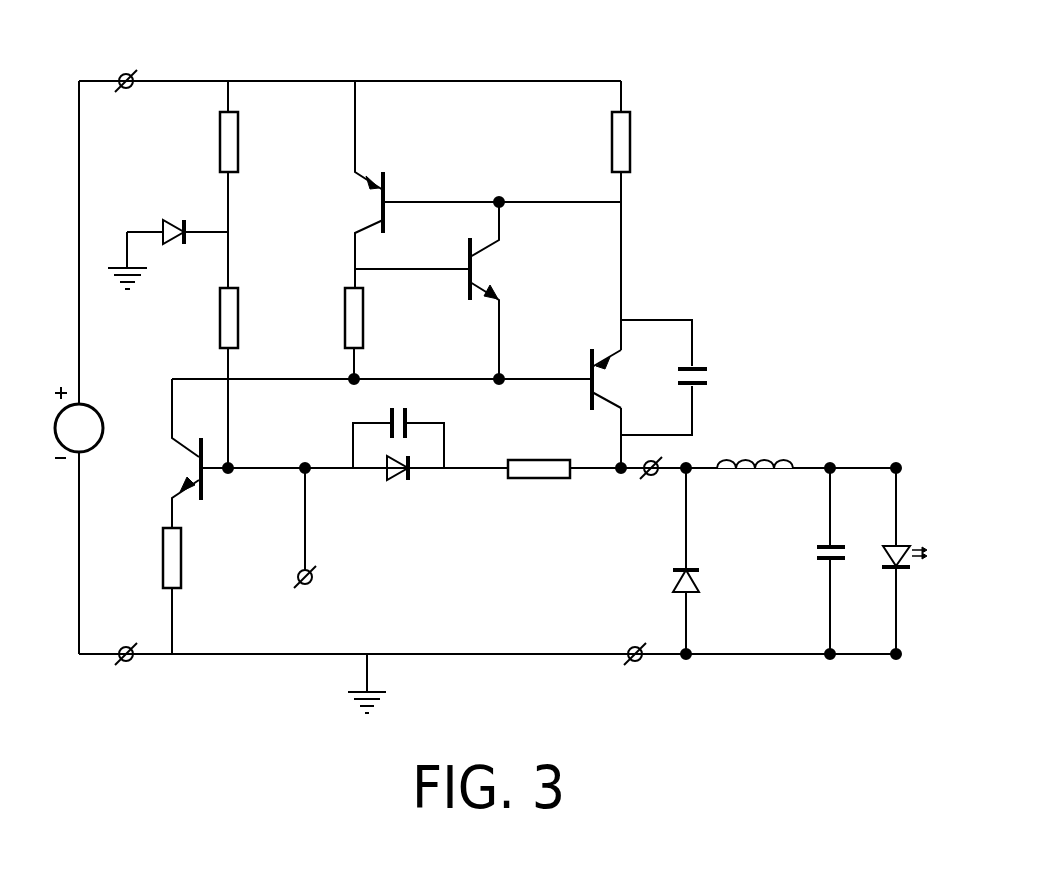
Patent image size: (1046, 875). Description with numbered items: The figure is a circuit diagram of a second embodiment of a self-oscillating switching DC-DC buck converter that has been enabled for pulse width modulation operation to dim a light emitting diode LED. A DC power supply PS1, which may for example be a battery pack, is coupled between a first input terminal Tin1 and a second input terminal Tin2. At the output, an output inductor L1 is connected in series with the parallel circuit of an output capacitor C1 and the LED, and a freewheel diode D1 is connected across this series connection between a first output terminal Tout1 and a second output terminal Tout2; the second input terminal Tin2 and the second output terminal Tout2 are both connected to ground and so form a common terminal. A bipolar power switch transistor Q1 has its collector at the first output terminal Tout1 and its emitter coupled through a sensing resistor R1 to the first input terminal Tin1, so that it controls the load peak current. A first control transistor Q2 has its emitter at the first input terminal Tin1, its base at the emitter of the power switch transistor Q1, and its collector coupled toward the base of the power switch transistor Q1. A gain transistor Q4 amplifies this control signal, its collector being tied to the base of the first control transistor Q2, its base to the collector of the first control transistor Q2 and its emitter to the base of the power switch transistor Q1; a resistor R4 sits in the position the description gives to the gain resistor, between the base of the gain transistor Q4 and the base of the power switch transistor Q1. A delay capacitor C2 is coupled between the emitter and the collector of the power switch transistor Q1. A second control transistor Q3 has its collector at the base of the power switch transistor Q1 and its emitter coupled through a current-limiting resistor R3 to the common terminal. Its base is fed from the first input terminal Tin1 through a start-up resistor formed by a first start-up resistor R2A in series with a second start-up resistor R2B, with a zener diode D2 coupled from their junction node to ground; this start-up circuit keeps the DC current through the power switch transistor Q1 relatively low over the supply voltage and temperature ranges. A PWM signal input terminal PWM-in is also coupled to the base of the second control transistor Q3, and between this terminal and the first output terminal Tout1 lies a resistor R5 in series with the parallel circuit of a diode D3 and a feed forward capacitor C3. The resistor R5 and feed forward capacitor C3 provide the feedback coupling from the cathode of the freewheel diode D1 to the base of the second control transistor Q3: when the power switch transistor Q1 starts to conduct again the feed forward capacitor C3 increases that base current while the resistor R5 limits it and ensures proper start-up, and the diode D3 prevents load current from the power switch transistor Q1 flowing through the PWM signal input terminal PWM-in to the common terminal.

The first input terminal Tin1 is at (120, 74).
The second input terminal Tin2 is at (124, 663).
The first output terminal Tout1 is at (644, 477).
The second output terminal Tout2 is at (633, 663).
The PWM signal input terminal PWM-in is at (313, 577).
The DC power supply PS1 is at (104, 428).
The first start-up resistor R2A is at (199, 184).
The second start-up resistor R2B is at (200, 378).
The zener diode D2 is at (177, 212).
The first control transistor Q2 is at (474, 184).
The gain transistor Q4 is at (442, 290).
The sensing resistor R1 is at (600, 142).
The resistor R4 is at (335, 333).
The power switch transistor Q1 is at (621, 379).
The delay capacitor C2 is at (684, 377).
The second control transistor Q3 is at (173, 453).
The current-limiting resistor R3 is at (153, 591).
The feed forward capacitor C3 is at (398, 425).
The diode D3 is at (402, 485).
The resistor R5 is at (539, 450).
The output inductor L1 is at (770, 460).
The freewheel diode D1 is at (707, 561).
The output capacitor C1 is at (811, 561).
The light emitting diode LED is at (922, 561).